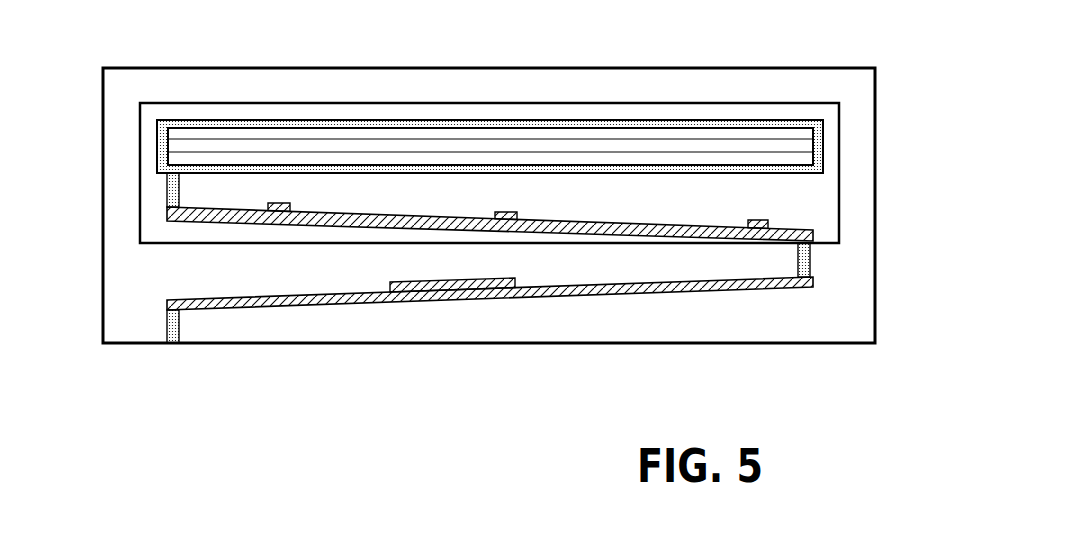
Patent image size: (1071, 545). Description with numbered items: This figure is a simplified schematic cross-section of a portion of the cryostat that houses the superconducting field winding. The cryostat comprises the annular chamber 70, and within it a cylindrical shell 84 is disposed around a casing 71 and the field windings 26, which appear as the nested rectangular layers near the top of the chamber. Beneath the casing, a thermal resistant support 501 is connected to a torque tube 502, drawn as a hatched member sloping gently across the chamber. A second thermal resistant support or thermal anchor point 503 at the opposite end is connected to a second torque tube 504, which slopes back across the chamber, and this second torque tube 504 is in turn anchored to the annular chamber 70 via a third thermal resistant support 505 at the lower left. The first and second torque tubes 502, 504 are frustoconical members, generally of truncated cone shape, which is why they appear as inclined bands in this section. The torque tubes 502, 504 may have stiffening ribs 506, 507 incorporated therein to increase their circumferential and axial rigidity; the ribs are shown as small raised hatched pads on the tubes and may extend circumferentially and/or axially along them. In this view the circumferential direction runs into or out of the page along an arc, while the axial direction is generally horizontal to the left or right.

The annular chamber 70 is at (150, 67).
The cylindrical shell 84 is at (733, 103).
The casing 71 is at (566, 120).
The field windings 26 is at (375, 148).
The thermal resistant support 501 is at (167, 192).
The torque tube 502 is at (555, 222).
The second thermal resistant support or thermal anchor point 503 is at (812, 258).
The second torque tube 504 is at (425, 300).
The third thermal resistant support 505 is at (187, 340).
The stiffening rib 506 is at (768, 222).
The stiffening rib 507 is at (390, 285).